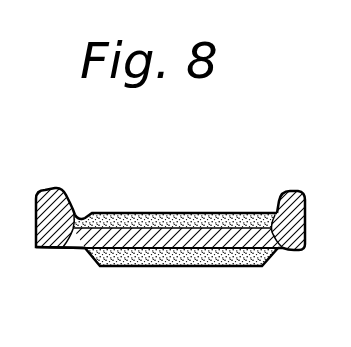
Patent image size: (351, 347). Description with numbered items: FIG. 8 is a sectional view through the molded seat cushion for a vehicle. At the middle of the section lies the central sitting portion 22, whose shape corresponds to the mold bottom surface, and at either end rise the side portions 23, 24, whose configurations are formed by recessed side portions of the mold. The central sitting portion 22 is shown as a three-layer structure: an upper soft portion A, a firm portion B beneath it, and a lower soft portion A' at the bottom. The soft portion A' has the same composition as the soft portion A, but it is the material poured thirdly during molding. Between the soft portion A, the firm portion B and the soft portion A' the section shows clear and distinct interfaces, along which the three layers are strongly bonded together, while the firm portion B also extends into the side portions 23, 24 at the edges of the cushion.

The central sitting portion 22 is at (188, 212).
The side portion 23 is at (58, 190).
The side portion 24 is at (297, 192).
The soft portion A is at (142, 191).
The soft portion A' is at (217, 283).
The firm portion B is at (48, 250).